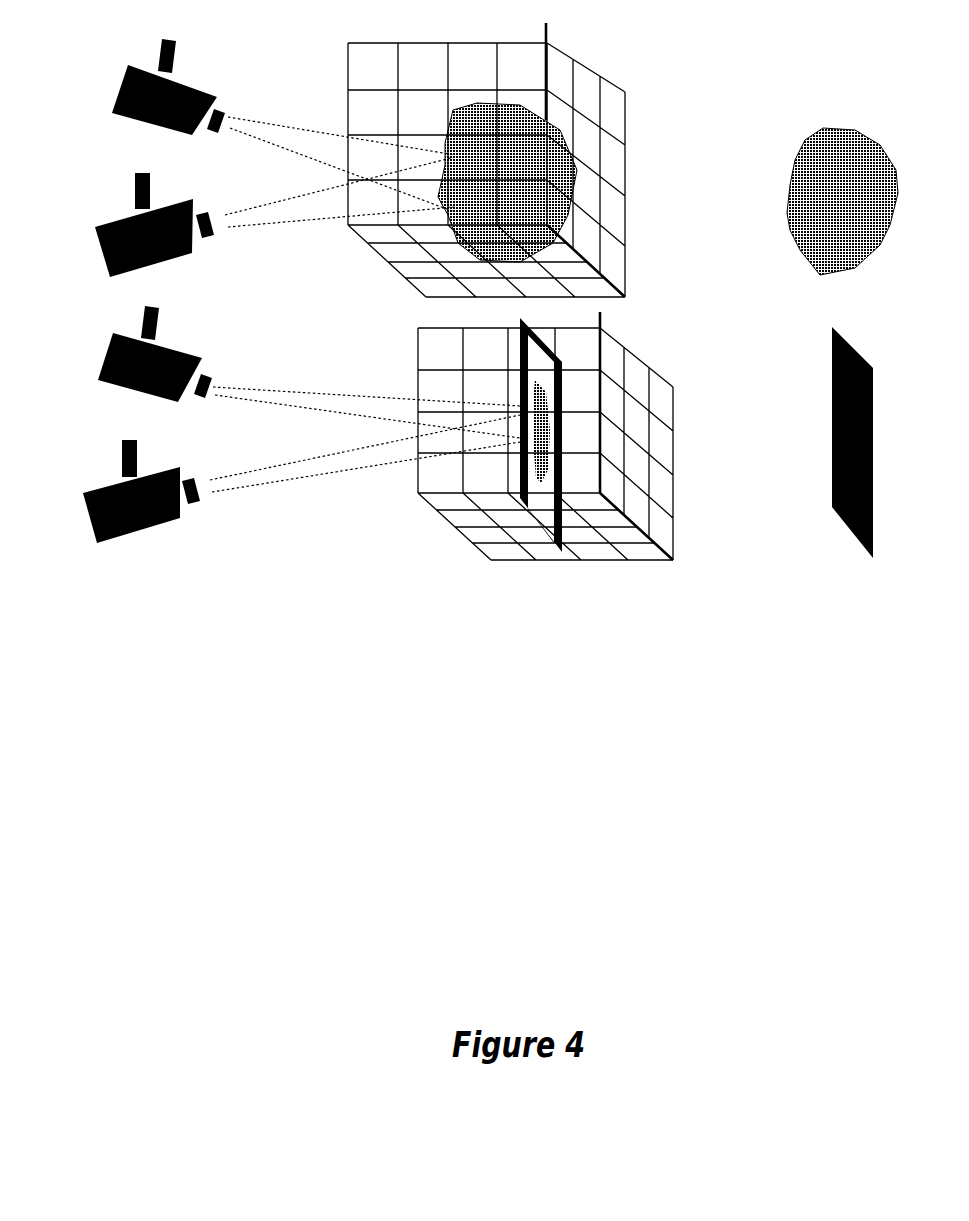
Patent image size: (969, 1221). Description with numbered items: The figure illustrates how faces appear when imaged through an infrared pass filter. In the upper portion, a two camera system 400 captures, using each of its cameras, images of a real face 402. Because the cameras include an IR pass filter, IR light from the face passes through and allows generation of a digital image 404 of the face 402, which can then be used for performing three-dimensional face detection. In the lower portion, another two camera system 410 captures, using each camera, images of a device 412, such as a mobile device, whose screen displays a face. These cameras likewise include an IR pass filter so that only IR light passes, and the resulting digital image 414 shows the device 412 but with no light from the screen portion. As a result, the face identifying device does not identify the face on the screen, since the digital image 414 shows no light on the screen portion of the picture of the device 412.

The two camera system 400 is at (128, 35).
The face 402 is at (482, 94).
The digital image 404 is at (805, 120).
The two camera system 410 is at (128, 317).
The device 412 is at (512, 327).
The digital image 414 is at (807, 328).